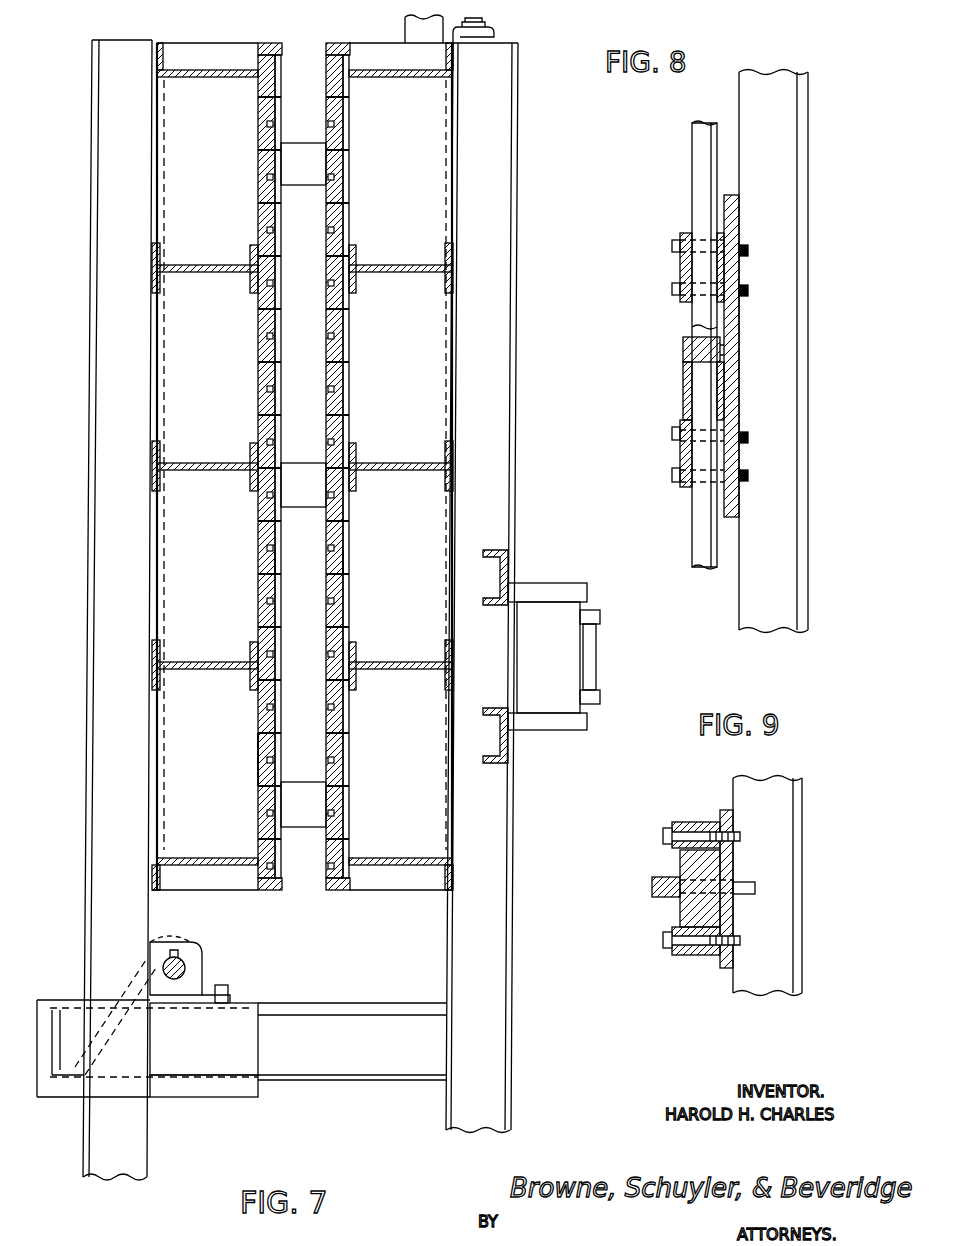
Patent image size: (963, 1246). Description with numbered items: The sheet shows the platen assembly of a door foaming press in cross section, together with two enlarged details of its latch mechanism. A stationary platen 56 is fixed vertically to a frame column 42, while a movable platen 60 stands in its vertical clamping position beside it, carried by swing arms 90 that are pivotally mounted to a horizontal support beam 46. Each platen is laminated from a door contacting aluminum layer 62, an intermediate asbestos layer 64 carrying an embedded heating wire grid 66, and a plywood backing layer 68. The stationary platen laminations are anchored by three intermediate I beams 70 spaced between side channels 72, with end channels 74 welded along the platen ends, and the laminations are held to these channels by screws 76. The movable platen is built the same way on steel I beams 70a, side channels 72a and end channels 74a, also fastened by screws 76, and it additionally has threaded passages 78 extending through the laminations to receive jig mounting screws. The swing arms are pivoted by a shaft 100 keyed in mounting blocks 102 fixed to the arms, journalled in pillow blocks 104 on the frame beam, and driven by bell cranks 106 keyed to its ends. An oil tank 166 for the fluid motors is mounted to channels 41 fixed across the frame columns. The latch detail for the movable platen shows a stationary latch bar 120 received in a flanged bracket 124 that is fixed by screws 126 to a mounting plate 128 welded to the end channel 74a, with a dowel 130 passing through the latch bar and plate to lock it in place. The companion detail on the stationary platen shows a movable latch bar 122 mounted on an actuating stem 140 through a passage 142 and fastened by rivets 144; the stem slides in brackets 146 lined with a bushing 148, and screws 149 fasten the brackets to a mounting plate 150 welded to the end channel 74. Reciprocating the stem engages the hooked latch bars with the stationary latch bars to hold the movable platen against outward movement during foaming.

In FIG. 7, the channels 41 is at (490, 550).
In FIG. 7, the frame column 42 is at (500, 858).
In FIG. 7, the horizontal support beam 46 is at (370, 1035).
In FIG. 7, the stationary platen 56 is at (416, 136).
In FIG. 7, the movable platen 60 is at (138, 136).
In FIG. 7, the door contacting rectangular layer 62 is at (330, 275).
In FIG. 7, the intermediate asbestos layer 64 is at (327, 352).
In FIG. 7, the heating wire grid 66 is at (330, 389).
In FIG. 7, the rectangular plywood layer 68 is at (333, 567).
In FIG. 7, the intermediate I beams 70 is at (395, 268).
In FIG. 7, the steel I beams 70a is at (225, 248).
In FIG. 7, the side channels 72 is at (403, 74).
In FIG. 7, the side channels 72a is at (230, 72).
In FIG. 8, the end channels 74 is at (782, 555).
In FIG. 9, the end channels 74a is at (782, 972).
In FIG. 7, the screws 76 is at (335, 52).
In FIG. 7, the threaded passages 78 is at (258, 785).
In FIG. 7, the swing arms 90 is at (113, 440).
In FIG. 7, the shaft 100 is at (187, 970).
In FIG. 7, the mounting blocks 102 is at (193, 944).
In FIG. 7, the pillow blocks 104 is at (222, 997).
In FIG. 7, the bell cranks 106 is at (163, 1022).
In FIG. 7, the stationary latch bars 120 is at (300, 152).
In FIG. 9, the stationary latch bars 120 is at (690, 903).
In FIG. 8, the movable latch bars 122 is at (685, 372).
In FIG. 9, the flanged brackets 124 is at (698, 822).
In FIG. 9, the screws 126 is at (680, 835).
In FIG. 9, the mounting plates 128 is at (725, 863).
In FIG. 9, the dowels 130 is at (660, 882).
In FIG. 8, the actuating stem 140 is at (707, 163).
In FIG. 8, the passages 142 is at (688, 343).
In FIG. 8, the rivets 144 is at (718, 398).
In FIG. 8, the brackets 146 is at (680, 270).
In FIG. 8, the bushing 148 is at (692, 240).
In FIG. 8, the screws 149 is at (748, 287).
In FIG. 8, the mounting plates 150 is at (764, 356).
In FIG. 7, the oil tank 166 is at (542, 613).